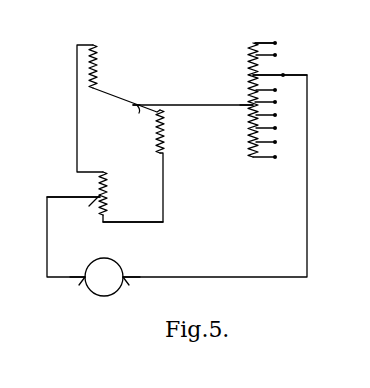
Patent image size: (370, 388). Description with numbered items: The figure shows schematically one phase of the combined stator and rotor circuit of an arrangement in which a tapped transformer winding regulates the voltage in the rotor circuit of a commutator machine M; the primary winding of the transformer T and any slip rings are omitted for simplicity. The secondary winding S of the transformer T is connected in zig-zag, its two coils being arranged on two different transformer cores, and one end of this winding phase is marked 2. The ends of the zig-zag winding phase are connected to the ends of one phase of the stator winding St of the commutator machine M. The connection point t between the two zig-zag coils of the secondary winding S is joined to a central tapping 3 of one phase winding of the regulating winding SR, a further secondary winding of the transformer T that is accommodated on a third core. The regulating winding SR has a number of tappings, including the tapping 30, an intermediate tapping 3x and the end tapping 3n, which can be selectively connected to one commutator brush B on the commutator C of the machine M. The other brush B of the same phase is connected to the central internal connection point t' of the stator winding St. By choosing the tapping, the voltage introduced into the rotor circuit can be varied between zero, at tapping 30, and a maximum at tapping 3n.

The stator voltage vector end point 2 is at (90, 58).
The central tapping of the regulating winding 3 is at (245, 115).
The zero tapping of the regulating winding 30 is at (168, 222).
The end tapping of the regulating winding 3n is at (277, 44).
The intermediate tapping of the regulating winding 3x is at (215, 169).
The secondary winding of the transformer S is at (138, 104).
The transformer T is at (175, 73).
The connection point between the zig-zag coils t is at (132, 116).
The stator winding St is at (112, 193).
The central internal connection point of the stator winding t' is at (86, 209).
The commutator machine M is at (129, 236).
The commutator C is at (104, 277).
The commutator brush B is at (99, 291).
The regulating winding SR is at (253, 100).